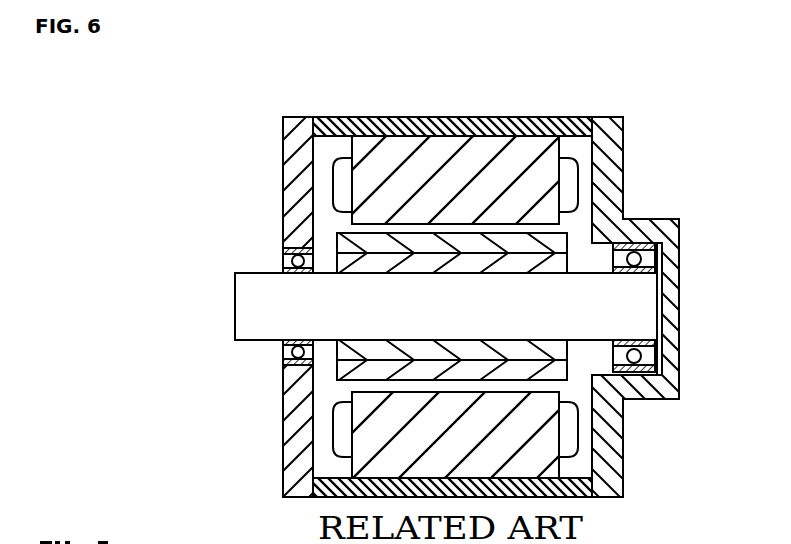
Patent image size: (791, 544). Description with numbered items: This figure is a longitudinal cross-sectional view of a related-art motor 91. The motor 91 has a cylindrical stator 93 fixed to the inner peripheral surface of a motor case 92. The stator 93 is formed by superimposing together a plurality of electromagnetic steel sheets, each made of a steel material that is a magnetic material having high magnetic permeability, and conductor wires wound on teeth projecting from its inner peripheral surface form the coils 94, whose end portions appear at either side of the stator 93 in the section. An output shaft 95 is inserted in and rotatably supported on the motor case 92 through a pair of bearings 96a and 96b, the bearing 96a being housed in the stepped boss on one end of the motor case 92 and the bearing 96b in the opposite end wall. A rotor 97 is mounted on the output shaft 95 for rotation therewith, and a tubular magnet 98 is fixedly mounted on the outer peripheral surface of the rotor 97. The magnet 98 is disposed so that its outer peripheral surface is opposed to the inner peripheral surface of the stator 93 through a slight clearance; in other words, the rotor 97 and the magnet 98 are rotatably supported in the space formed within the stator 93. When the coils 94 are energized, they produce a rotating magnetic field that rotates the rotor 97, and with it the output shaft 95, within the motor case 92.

The motor 91 is at (628, 148).
The motor case 92 is at (513, 118).
The stator 93 is at (400, 142).
The coils 94 is at (574, 186).
The output shaft 95 is at (235, 301).
The bearing 96a is at (679, 245).
The bearing 96b is at (283, 251).
The rotor 97 is at (590, 266).
The magnet 98 is at (590, 368).